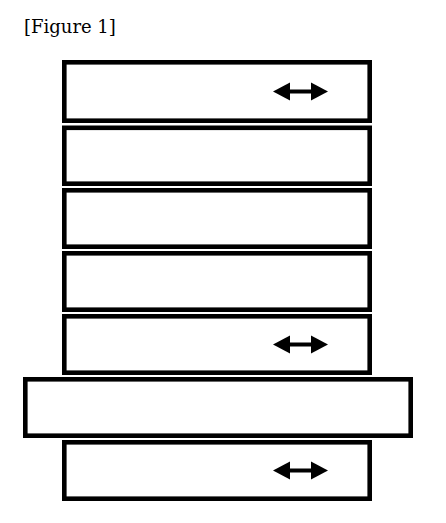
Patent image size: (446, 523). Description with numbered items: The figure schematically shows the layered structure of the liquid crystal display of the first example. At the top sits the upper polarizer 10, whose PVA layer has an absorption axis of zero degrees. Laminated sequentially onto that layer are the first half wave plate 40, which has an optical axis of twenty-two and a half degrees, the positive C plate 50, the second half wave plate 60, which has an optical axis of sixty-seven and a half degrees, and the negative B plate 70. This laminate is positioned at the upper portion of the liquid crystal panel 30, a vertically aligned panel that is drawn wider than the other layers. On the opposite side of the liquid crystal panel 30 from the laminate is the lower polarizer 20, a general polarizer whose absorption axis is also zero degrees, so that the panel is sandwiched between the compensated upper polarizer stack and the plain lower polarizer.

The upper polarizer 10 is at (216, 91).
The first half wave plate 40 is at (216, 156).
The positive C plate 50 is at (216, 218).
The second half wave plate 60 is at (216, 281).
The negative B plate 70 is at (216, 344).
The liquid crystal panel 30 is at (217, 407).
The lower polarizer 20 is at (216, 470).